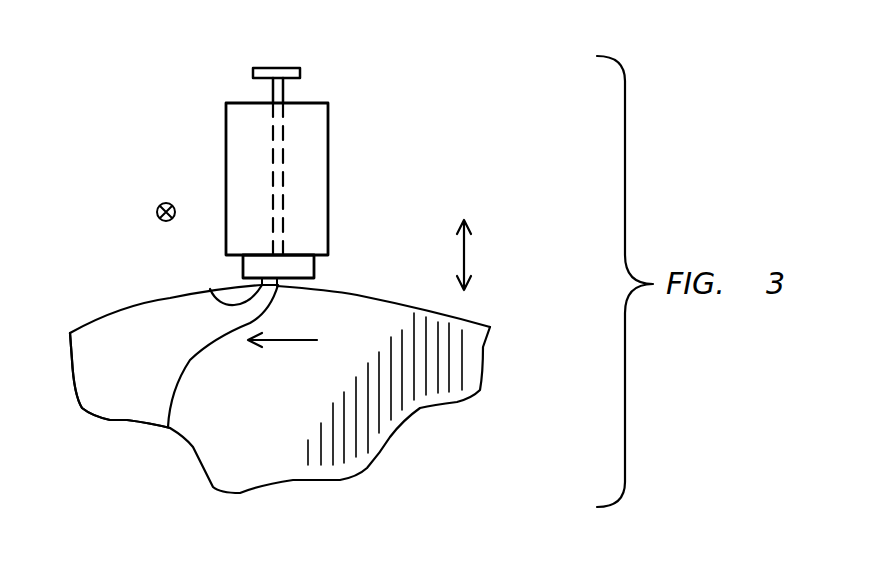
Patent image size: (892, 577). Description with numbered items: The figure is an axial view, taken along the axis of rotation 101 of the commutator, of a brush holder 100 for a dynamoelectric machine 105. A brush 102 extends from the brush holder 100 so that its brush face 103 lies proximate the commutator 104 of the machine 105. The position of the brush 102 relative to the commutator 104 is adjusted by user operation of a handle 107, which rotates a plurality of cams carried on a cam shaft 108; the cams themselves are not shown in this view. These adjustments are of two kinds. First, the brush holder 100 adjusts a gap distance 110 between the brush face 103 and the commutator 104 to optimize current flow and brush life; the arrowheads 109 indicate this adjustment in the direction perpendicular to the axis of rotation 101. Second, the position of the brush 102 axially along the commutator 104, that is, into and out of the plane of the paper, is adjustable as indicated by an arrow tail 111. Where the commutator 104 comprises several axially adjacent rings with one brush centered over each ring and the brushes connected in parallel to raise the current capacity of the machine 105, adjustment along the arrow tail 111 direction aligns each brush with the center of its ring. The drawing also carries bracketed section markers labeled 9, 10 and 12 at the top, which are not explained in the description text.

The view direction of FIG. 9 is at (217, 128).
The view direction of FIG. 10 is at (217, 180).
The view direction of FIG. 12 is at (217, 153).
The brush holder 100 is at (328, 204).
The axis of rotation 101 is at (285, 338).
The brush 102 is at (168, 428).
The brush face 103 is at (210, 289).
The commutator 104 is at (490, 327).
The dynamoelectric machine 105 is at (507, 410).
The handle 107 is at (275, 68).
The cam shaft 108 is at (283, 219).
The arrowheads 109 is at (464, 252).
The gap distance 110 is at (310, 283).
The arrow tail 111 is at (157, 220).